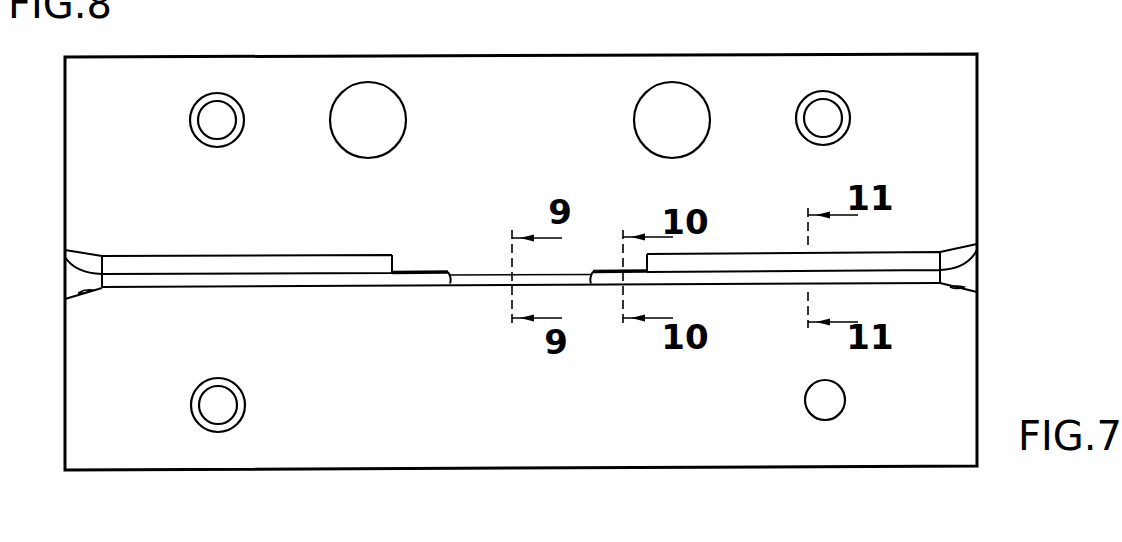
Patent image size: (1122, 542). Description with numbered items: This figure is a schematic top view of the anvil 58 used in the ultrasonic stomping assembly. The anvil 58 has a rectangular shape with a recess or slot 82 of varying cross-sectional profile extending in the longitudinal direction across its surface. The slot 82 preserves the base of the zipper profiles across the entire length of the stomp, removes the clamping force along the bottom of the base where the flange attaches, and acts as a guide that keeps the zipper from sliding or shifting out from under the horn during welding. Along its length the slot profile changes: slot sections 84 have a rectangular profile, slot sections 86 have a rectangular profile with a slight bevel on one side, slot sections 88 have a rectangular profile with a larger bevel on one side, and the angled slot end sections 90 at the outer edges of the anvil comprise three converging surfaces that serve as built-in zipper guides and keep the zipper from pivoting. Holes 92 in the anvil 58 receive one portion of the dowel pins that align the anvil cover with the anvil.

The anvil 58 is at (978, 118).
The recess or slot 82 is at (513, 301).
The slot sections 84 is at (475, 277).
The slot sections 86 is at (421, 277).
The slot sections 88 is at (207, 287).
The slot end sections 90 is at (75, 282).
The holes 92 is at (396, 93).